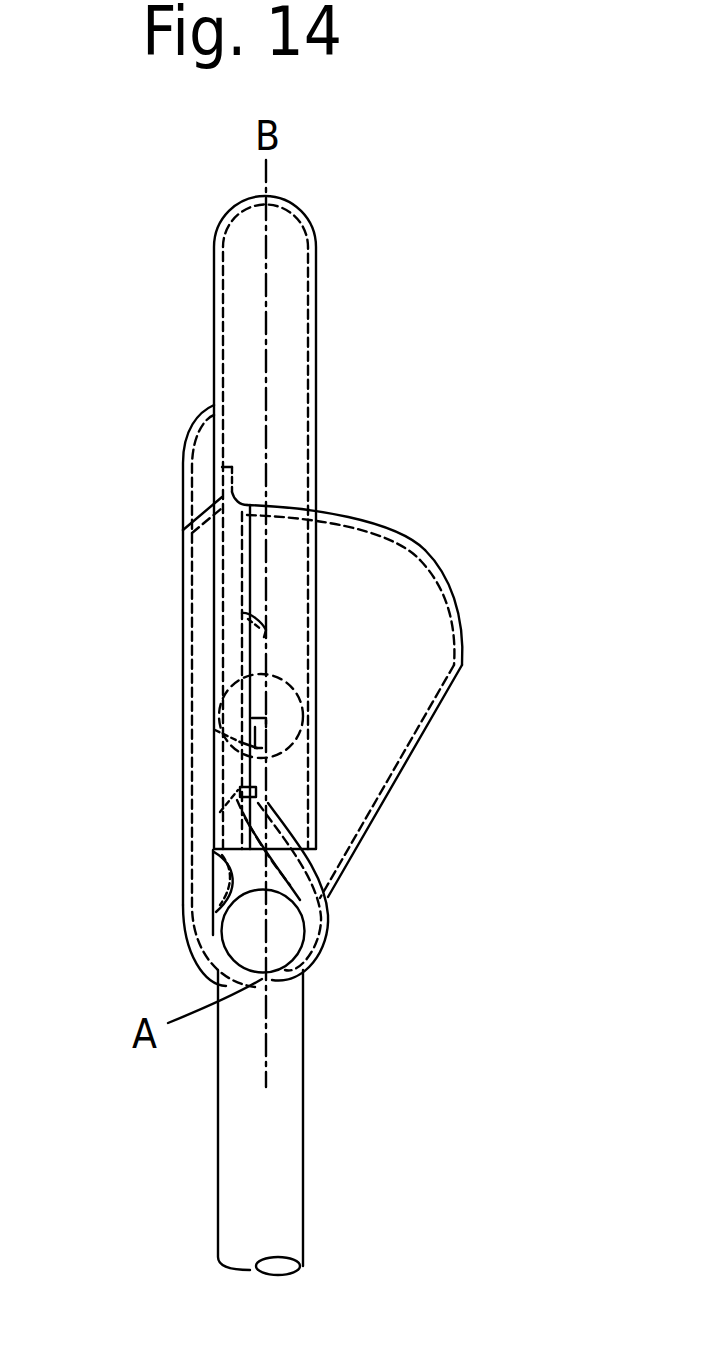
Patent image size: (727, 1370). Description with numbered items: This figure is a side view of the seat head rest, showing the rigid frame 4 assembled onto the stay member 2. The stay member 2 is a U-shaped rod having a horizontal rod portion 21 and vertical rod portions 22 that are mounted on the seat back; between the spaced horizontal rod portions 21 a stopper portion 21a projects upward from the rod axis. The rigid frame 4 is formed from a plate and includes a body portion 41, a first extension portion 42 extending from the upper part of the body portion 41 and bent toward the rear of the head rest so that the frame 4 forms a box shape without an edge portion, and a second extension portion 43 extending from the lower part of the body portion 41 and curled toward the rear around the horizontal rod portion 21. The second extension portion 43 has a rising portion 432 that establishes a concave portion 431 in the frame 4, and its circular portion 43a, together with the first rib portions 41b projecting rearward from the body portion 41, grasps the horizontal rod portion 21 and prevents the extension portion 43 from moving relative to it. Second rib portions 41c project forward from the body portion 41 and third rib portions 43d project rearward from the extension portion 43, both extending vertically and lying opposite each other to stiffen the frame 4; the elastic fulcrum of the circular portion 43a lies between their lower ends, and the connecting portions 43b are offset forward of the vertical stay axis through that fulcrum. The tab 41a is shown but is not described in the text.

The stay member 2 is at (315, 1185).
The rigid frame 4 is at (318, 220).
The horizontal rod portion 21 is at (235, 927).
The stopper portion 21a is at (293, 702).
The vertical rod portion 22 is at (222, 1117).
The body portion 41 is at (210, 360).
The engaging tab 41a is at (255, 796).
The first rib portion 41b is at (228, 882).
The second rib portion 41c is at (185, 638).
The first extension portion 42 is at (290, 360).
The second extension portion 43 is at (370, 513).
The concave portion 431 is at (385, 743).
The rising portion 432 is at (443, 568).
The circular portion 43a is at (272, 981).
The connecting portion 43b is at (247, 557).
The third rib portion 43d is at (263, 652).